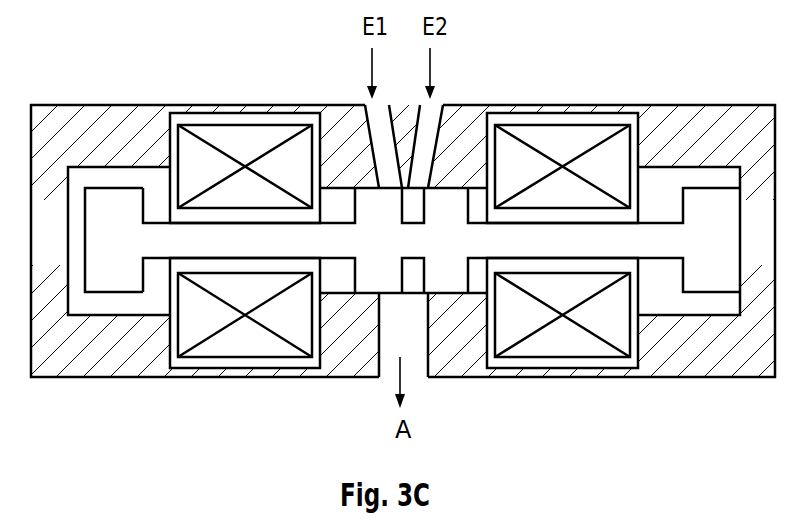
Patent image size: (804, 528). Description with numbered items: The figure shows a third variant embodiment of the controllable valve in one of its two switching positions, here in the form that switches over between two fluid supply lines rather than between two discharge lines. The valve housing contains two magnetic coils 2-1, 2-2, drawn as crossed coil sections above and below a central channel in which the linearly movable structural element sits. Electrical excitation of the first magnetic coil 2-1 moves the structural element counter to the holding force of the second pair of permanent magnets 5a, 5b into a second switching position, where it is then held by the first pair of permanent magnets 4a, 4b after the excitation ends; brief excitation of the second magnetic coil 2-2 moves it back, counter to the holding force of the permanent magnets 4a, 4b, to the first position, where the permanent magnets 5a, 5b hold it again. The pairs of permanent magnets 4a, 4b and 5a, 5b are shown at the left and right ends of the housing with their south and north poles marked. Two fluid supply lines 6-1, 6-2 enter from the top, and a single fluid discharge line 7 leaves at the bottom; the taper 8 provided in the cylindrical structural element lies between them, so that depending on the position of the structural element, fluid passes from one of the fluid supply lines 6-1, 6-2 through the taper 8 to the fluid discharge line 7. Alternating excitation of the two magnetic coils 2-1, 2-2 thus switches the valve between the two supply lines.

The first magnetic coil 2-1 is at (244, 146).
The second magnetic coil 2-2 is at (563, 146).
The first permanent magnet 4a is at (60, 260).
The first permanent magnet 4b is at (120, 260).
The second permanent magnet 5a is at (720, 261).
The second permanent magnet 5b is at (767, 261).
The first fluid supply line 6-1 is at (372, 69).
The second fluid supply line 6-2 is at (430, 69).
The fluid discharge line 7 is at (403, 378).
The taper 8 is at (418, 250).